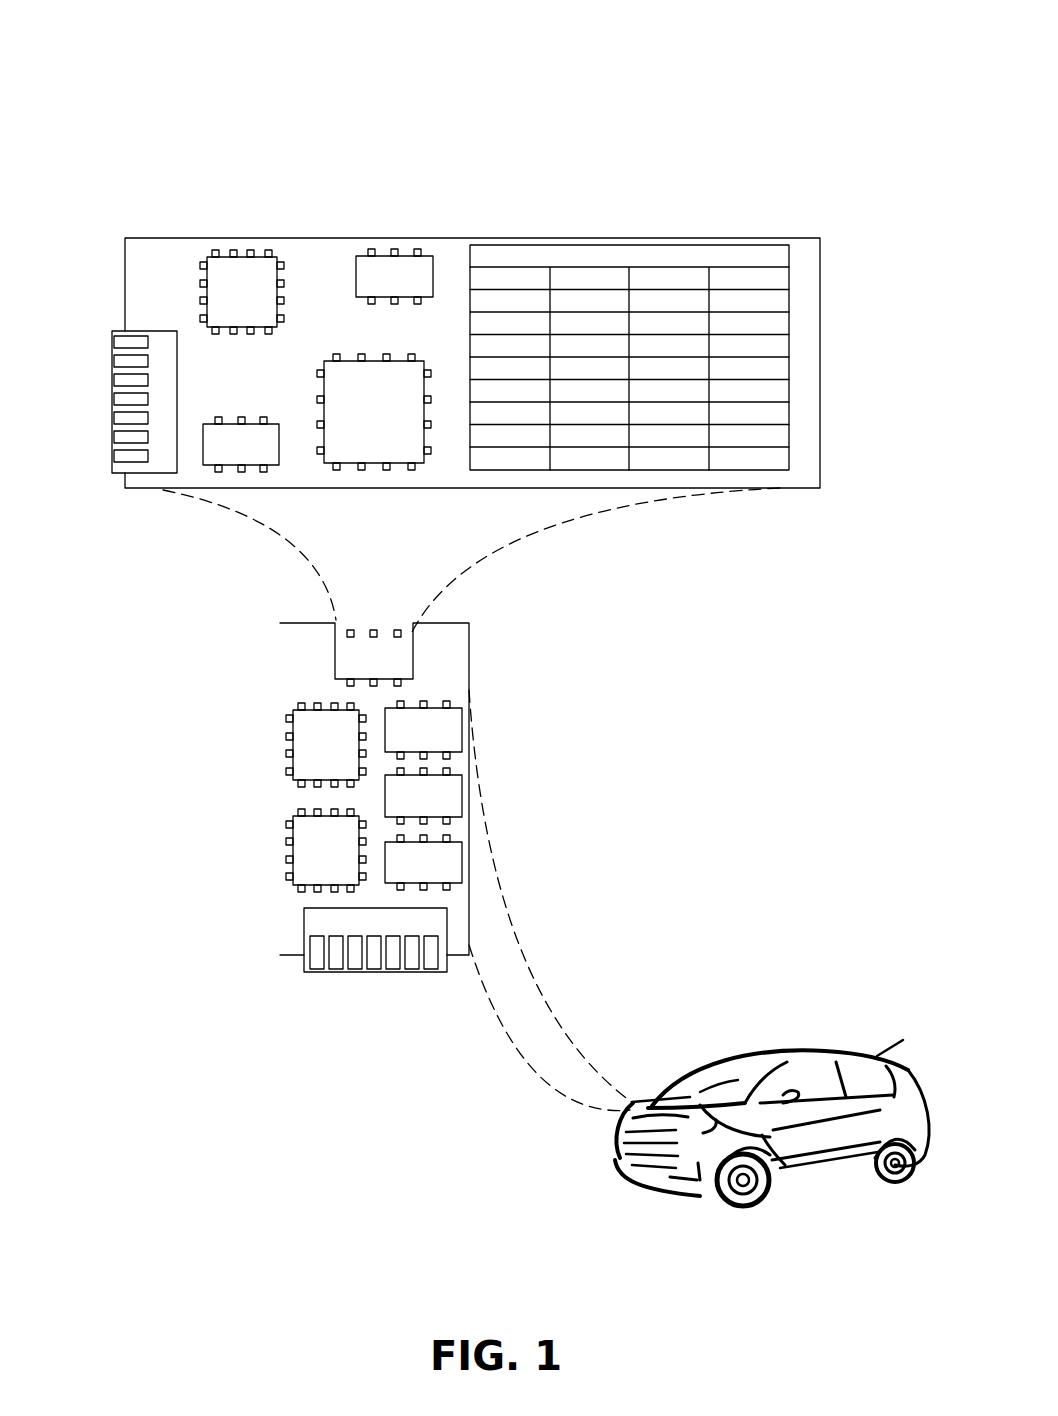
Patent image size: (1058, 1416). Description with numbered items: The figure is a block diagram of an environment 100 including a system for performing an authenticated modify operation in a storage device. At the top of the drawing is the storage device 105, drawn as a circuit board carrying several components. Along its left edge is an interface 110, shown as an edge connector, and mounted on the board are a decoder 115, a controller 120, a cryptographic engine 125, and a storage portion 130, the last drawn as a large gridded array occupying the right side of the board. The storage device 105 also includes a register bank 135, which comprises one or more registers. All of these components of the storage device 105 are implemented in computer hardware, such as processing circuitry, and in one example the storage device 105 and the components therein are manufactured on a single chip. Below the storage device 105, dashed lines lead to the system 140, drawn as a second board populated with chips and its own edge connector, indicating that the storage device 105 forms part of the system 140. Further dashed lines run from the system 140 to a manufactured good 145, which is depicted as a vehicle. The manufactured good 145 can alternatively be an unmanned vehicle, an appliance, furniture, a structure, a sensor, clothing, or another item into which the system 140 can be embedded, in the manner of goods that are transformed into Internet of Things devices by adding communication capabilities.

The environment 100 is at (872, 20).
The storage device 105 is at (146, 237).
The interface 110 is at (113, 333).
The decoder 115 is at (250, 468).
The controller 120 is at (372, 463).
The cryptographic engine 125 is at (222, 257).
The storage portion 130 is at (791, 280).
The register bank 135 is at (408, 255).
The system 140 is at (281, 622).
The manufactured good 145 is at (787, 1052).